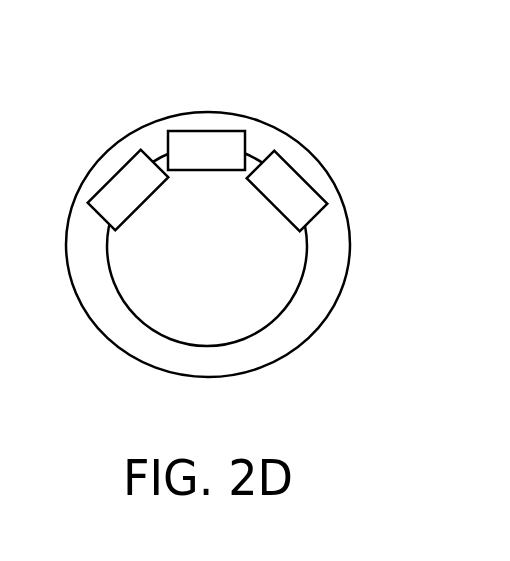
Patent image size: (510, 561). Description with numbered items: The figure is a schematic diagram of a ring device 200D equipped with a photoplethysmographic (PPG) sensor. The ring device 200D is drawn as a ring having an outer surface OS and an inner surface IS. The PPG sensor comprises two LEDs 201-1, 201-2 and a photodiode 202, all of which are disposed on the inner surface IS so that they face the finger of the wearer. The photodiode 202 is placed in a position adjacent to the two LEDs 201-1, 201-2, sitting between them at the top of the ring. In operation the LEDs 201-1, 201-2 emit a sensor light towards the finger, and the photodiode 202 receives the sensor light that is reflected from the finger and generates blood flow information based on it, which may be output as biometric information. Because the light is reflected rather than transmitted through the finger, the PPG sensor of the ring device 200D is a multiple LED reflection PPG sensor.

The ring device 200D is at (393, 405).
The outer surface OS is at (207, 112).
The inner surface IS is at (107, 243).
The LED 201-1 is at (113, 177).
The LED 201-2 is at (301, 176).
The photodiode 202 is at (230, 131).